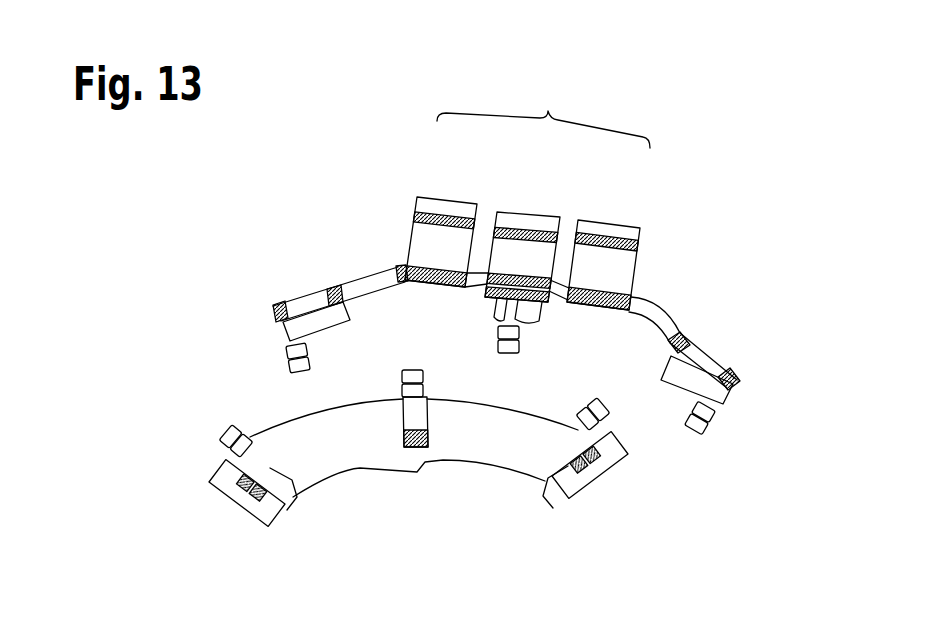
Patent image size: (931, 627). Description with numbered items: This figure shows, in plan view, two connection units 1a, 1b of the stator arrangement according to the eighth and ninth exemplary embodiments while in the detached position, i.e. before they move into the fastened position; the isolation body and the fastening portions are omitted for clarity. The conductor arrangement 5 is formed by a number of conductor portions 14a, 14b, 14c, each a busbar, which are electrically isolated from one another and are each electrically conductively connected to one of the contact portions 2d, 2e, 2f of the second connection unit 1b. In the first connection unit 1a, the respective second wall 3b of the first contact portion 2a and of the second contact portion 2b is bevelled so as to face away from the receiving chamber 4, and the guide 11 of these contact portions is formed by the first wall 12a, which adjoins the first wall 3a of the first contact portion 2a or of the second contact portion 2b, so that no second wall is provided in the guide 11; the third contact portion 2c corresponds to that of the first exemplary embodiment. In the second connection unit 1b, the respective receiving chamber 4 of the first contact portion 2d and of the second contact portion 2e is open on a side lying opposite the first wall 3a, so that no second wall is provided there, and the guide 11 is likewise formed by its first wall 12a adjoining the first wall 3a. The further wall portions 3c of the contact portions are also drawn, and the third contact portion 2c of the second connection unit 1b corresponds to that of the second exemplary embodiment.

The conductor arrangement 5 is at (548, 112).
The conductor portion 14a is at (445, 210).
The conductor portion 14b is at (527, 222).
The conductor portion 14c is at (608, 232).
The second connection unit 1b is at (702, 243).
The first connection unit 1a is at (207, 375).
The first contact portion 2a is at (191, 434).
The second contact portion 2b is at (630, 404).
The third contact portion 2c is at (444, 379).
The first contact portion 2d is at (322, 342).
The second contact portion 2e is at (707, 437).
The contact portion 2f is at (485, 330).
The first wall 3a is at (292, 315).
The second wall 3b is at (290, 488).
The connector housing part 3c is at (283, 330).
The receiving chamber 4 is at (271, 341).
The guide 11 is at (210, 436).
The first wall 12a is at (217, 457).